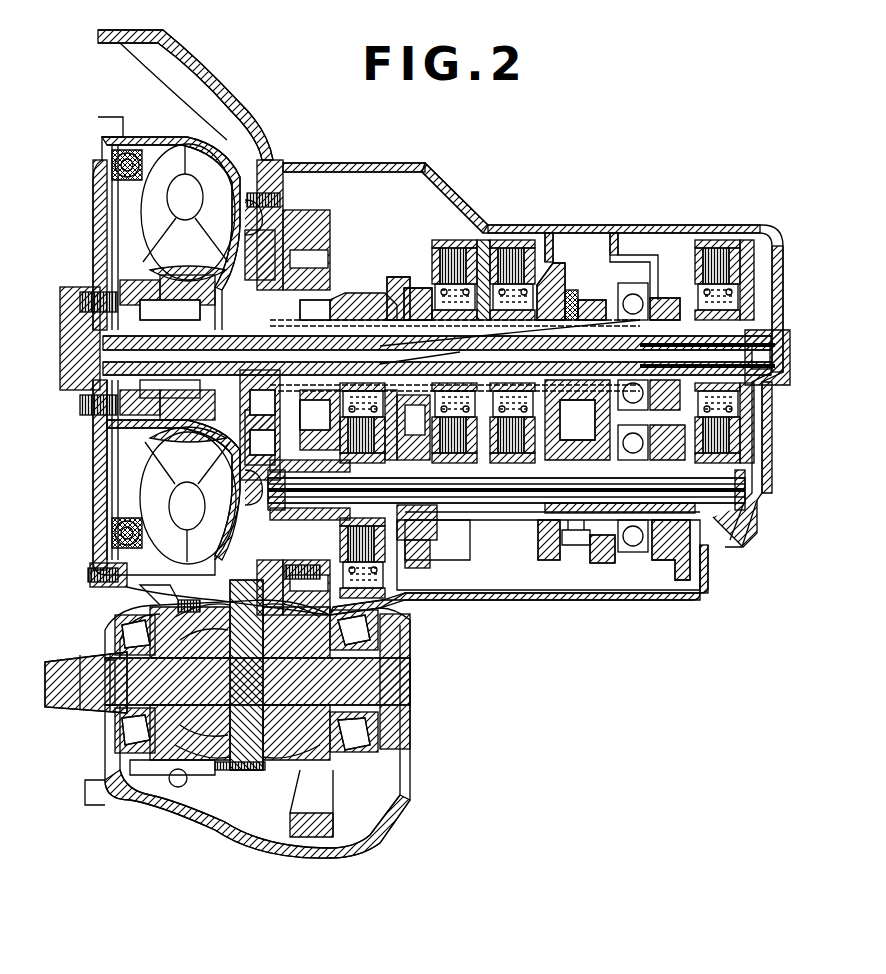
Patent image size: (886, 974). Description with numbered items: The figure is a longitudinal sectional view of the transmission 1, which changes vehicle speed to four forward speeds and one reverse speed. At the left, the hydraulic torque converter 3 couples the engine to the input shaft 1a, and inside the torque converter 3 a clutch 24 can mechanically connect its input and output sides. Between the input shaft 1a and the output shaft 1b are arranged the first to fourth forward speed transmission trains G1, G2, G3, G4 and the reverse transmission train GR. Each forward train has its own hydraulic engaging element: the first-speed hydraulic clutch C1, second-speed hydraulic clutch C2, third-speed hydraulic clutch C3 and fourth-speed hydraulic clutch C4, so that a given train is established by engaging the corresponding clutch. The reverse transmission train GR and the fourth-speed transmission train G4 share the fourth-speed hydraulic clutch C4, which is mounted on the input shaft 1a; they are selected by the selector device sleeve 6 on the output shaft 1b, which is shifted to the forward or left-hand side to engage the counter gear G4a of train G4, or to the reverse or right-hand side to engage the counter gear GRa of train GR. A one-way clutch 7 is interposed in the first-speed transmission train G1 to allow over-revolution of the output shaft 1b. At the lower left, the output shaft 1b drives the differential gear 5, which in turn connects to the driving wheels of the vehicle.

The transmission 1 is at (560, 244).
The input shaft 1a is at (350, 305).
The output shaft 1b is at (486, 518).
The hydraulic torque converter 3 is at (225, 150).
The differential gear 5 is at (214, 785).
The selector device sleeve 6 is at (578, 542).
The one-way clutch 7 is at (675, 555).
The clutch 24 is at (112, 168).
The first-speed hydraulic clutch C1 is at (732, 240).
The second-speed hydraulic clutch C2 is at (448, 240).
The third-speed hydraulic clutch C3 is at (338, 430).
The fourth-speed hydraulic clutch C4 is at (512, 240).
The first-speed transmission train G1 is at (668, 295).
The second-speed transmission train G2 is at (420, 284).
The third-speed transmission train G3 is at (396, 268).
The fourth-speed transmission train G4 is at (560, 272).
The counter gear G4a is at (550, 555).
The reverse transmission train GR is at (591, 298).
The counter gear GRa is at (600, 565).